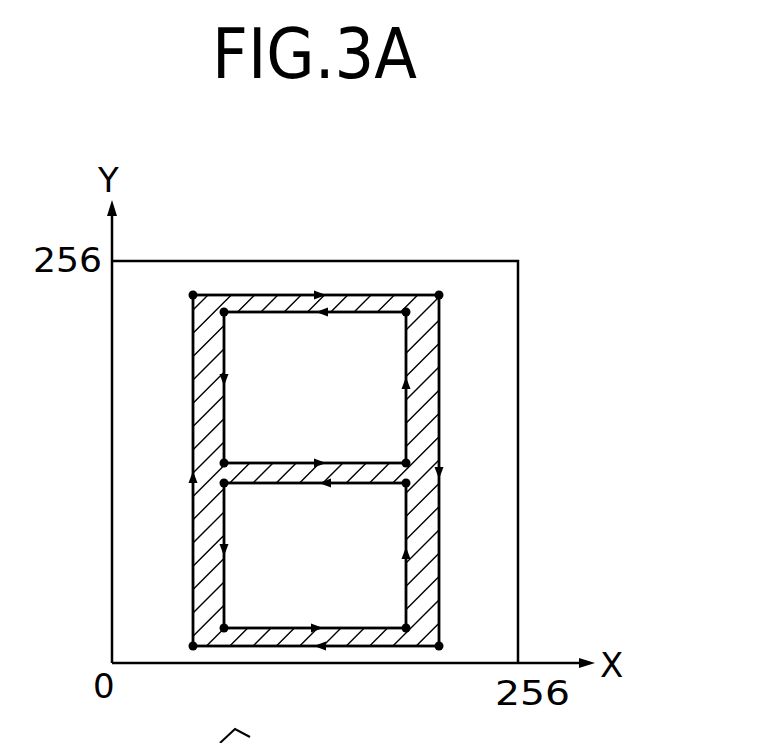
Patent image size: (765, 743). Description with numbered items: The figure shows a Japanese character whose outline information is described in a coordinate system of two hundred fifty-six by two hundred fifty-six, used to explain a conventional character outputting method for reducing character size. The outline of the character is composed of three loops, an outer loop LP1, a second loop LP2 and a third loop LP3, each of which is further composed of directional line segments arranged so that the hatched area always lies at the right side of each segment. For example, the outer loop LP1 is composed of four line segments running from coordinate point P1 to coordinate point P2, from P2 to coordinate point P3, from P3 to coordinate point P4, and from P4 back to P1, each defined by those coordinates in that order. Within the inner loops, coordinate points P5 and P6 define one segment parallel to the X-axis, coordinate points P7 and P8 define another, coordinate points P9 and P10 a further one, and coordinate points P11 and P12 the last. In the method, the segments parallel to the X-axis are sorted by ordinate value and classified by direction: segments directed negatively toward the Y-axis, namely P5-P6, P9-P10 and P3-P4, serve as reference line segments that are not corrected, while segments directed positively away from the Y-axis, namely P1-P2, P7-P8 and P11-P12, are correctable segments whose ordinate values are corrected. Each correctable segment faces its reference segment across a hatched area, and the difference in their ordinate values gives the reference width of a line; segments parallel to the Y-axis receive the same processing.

The coordinate point P1 is at (193, 295).
The coordinate point P2 is at (438, 296).
The coordinate point P3 is at (440, 647).
The coordinate point P4 is at (195, 646).
The coordinate point P5 is at (403, 314).
The coordinate point P6 is at (226, 314).
The coordinate point P7 is at (225, 463).
The coordinate point P8 is at (407, 463).
The coordinate point P9 is at (407, 483).
The coordinate point P10 is at (225, 483).
The coordinate point P11 is at (228, 626).
The coordinate point P12 is at (404, 626).
The outer loop LP1 is at (439, 375).
The second loop LP2 is at (401, 441).
The third loop LP3 is at (401, 535).